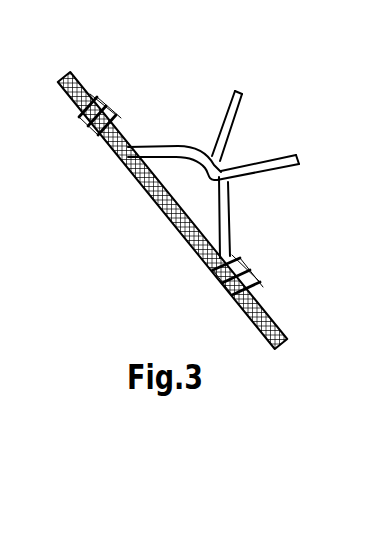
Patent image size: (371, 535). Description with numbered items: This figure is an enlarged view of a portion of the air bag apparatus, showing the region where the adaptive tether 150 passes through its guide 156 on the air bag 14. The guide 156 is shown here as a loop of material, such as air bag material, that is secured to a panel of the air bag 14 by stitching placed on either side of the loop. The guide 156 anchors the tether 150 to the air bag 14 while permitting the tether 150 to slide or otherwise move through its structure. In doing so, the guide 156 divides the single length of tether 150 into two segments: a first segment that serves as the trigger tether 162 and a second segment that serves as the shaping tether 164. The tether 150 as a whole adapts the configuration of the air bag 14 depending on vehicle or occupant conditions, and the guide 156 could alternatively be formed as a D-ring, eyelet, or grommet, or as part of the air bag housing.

The air bag 14 is at (161, 211).
The tether 150 is at (218, 138).
The guide 156 is at (230, 212).
The trigger tether 162 is at (280, 167).
The shaping tether 164 is at (245, 102).